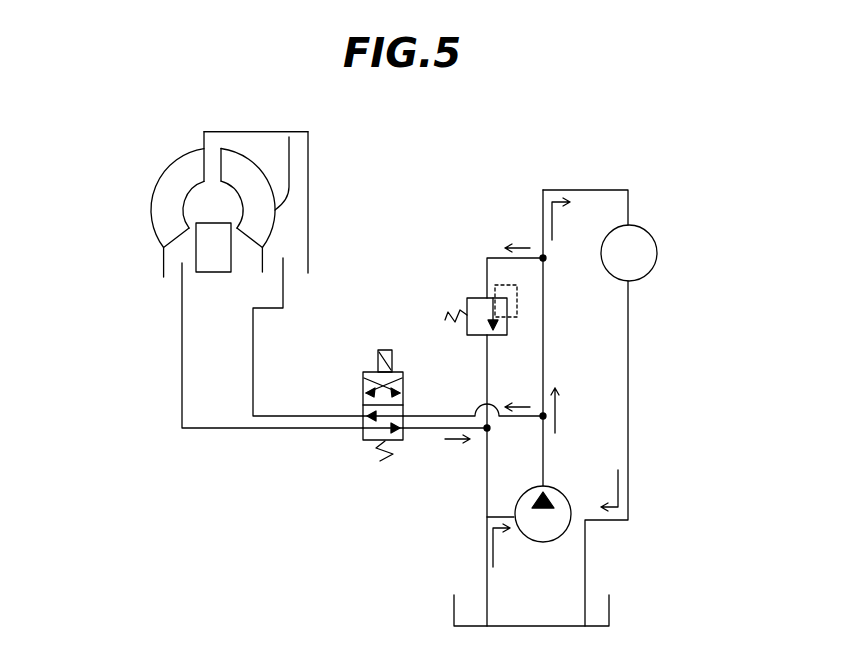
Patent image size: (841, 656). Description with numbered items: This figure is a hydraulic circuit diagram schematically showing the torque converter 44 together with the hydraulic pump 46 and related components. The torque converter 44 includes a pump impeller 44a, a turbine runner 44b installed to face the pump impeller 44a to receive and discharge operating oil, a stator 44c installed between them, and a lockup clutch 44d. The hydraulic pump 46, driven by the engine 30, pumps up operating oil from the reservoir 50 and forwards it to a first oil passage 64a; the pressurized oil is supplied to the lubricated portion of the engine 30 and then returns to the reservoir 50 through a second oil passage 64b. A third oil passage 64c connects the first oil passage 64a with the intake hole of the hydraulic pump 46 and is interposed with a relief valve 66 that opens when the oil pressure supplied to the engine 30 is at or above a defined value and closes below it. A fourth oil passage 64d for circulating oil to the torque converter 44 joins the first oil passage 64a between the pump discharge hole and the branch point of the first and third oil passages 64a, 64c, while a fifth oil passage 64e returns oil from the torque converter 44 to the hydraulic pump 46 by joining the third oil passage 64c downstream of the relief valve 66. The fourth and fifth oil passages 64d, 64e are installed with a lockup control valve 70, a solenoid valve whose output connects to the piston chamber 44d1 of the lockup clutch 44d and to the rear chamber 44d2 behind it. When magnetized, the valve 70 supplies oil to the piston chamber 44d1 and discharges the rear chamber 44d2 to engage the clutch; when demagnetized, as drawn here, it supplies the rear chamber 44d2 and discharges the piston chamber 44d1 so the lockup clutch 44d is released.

The engine 30 is at (655, 242).
The torque converter 44 is at (150, 183).
The pump impeller 44a is at (164, 228).
The turbine runner 44b is at (260, 218).
The stator 44c is at (212, 255).
The lockup clutch 44d is at (290, 175).
The piston chamber 44d1 is at (253, 143).
The rear chamber 44d2 is at (293, 257).
The hydraulic pump 46 is at (553, 490).
The reservoir 50 is at (610, 608).
The first oil passage 64a is at (543, 333).
The second oil passage 64b is at (628, 365).
The third oil passage 64c is at (482, 270).
The fourth oil passage 64d is at (438, 416).
The fifth oil passage 64e is at (430, 429).
The relief valve 66 is at (467, 303).
The lockup control valve 70 is at (367, 371).